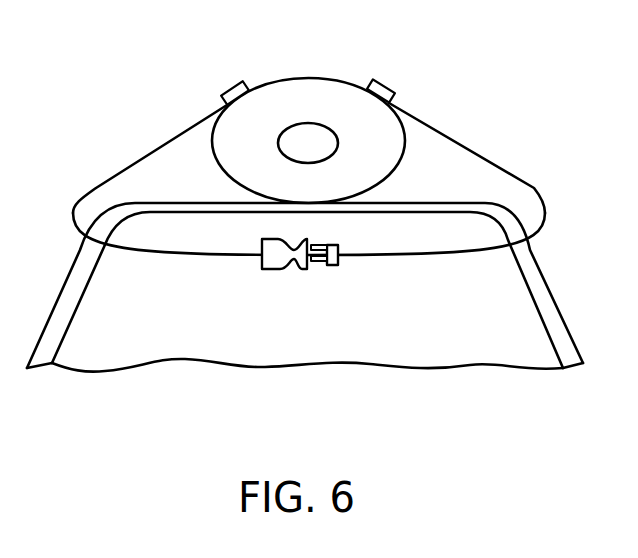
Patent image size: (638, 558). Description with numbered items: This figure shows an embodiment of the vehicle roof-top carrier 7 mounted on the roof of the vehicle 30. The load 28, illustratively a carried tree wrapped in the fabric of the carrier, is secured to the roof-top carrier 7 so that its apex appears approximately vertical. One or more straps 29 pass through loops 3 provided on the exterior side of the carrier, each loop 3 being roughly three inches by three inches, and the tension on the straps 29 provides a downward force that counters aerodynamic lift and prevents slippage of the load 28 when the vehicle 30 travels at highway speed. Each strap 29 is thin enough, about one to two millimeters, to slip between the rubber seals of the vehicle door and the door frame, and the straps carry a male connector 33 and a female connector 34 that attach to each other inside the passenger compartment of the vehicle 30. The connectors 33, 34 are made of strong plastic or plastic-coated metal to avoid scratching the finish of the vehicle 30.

The loops 3 is at (231, 85).
The roof-top carrier 7 is at (212, 153).
The load 28 is at (353, 160).
The straps 29 is at (547, 212).
The vehicle 30 is at (70, 275).
The male connector 33 is at (332, 265).
The female connector 34 is at (270, 271).